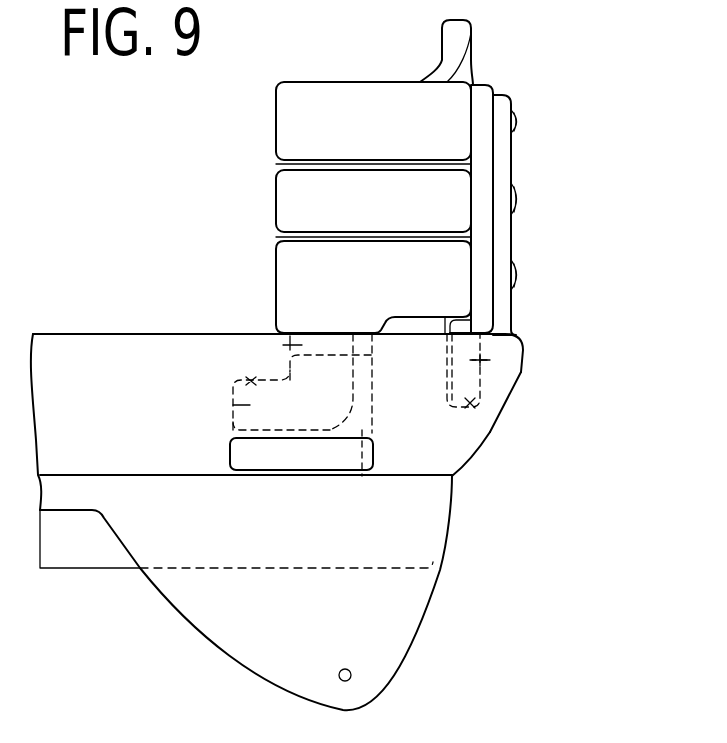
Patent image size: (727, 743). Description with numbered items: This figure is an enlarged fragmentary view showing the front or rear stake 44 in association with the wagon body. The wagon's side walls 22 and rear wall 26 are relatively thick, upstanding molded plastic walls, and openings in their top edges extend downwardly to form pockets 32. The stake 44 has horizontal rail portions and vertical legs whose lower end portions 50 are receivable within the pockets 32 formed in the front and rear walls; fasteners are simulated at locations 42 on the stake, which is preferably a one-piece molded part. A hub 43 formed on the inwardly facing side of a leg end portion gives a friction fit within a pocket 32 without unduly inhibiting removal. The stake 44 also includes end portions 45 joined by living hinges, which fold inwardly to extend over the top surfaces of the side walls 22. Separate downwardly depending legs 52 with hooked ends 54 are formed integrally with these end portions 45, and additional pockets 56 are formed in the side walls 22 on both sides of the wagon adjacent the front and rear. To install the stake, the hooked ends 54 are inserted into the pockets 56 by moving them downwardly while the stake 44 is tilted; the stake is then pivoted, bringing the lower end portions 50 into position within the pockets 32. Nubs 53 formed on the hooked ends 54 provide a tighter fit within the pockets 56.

The side walls 22 is at (112, 408).
The rear wall 26 is at (512, 393).
The pockets 32 is at (478, 413).
The fasteners 42 is at (520, 203).
The hub 43 is at (447, 387).
The stake 44 is at (512, 157).
The end portions 45 is at (313, 143).
The lower end portions 50 is at (490, 360).
The downwardly depending legs 52 is at (288, 345).
The nubs 53 is at (241, 380).
The hooked ends 54 is at (233, 400).
The additional pockets 56 is at (362, 476).